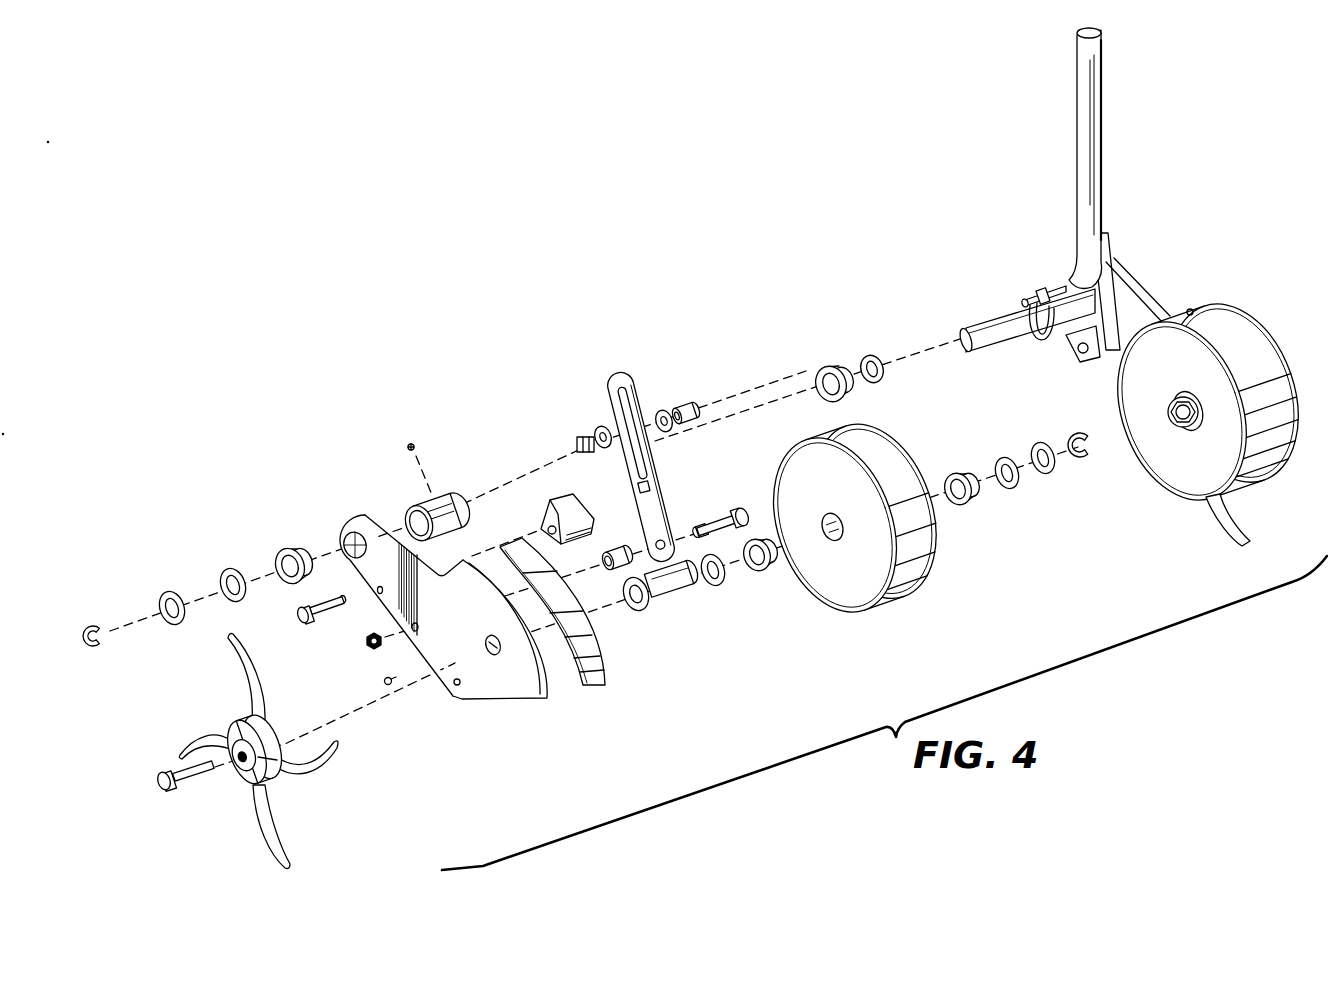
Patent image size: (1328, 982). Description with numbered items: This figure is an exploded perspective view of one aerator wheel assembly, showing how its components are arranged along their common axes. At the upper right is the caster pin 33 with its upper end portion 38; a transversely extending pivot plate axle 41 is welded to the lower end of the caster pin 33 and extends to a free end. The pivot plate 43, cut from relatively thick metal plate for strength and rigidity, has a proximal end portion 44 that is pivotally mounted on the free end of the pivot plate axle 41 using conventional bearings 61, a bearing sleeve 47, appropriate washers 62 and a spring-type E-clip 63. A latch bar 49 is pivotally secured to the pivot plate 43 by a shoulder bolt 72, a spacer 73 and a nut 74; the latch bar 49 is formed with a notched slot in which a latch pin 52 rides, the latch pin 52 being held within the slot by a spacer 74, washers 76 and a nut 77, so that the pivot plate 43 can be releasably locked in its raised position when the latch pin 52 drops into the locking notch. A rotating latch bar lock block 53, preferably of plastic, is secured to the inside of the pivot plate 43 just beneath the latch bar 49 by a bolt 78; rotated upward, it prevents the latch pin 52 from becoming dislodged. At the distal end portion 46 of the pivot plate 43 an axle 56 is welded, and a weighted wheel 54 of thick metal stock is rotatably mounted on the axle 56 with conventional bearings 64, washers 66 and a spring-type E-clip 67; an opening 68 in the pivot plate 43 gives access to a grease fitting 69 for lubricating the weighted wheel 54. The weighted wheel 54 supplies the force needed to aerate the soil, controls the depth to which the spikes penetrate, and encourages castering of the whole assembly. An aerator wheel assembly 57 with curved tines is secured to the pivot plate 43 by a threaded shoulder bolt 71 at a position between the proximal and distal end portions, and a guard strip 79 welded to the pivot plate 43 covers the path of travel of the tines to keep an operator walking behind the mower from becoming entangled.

The caster pin 33 is at (1100, 162).
The upper end portion 38 is at (1124, 87).
The pivot plate axle 41 is at (1025, 352).
The pivot plate 43 is at (382, 548).
The proximal end portion 44 is at (333, 522).
The distal end portion 46 is at (523, 722).
The bearing sleeve 47 is at (440, 503).
The latch bar 49 is at (613, 378).
The latch pin 52 is at (1044, 284).
The latch bar lock block 53 is at (560, 504).
The weighted wheel 54 is at (848, 592).
The axle 56 is at (677, 592).
The aerator wheel assembly 57 is at (233, 785).
The bearings 61 is at (288, 550).
The washers 62 is at (226, 572).
The E-clip 63 is at (103, 646).
The bearings 64 is at (775, 573).
The washers 66 is at (722, 590).
The E-clip 67 is at (1073, 463).
The opening 68 is at (494, 656).
The grease fitting 69 is at (392, 687).
The threaded shoulder bolt 71 is at (194, 778).
The shoulder bolt 72 is at (713, 520).
The spacer 73 is at (613, 546).
The nut 74 is at (367, 643).
The washers 76 is at (603, 427).
The nut 77 is at (578, 441).
The bolt 78 is at (333, 618).
The guard strip 79 is at (604, 664).